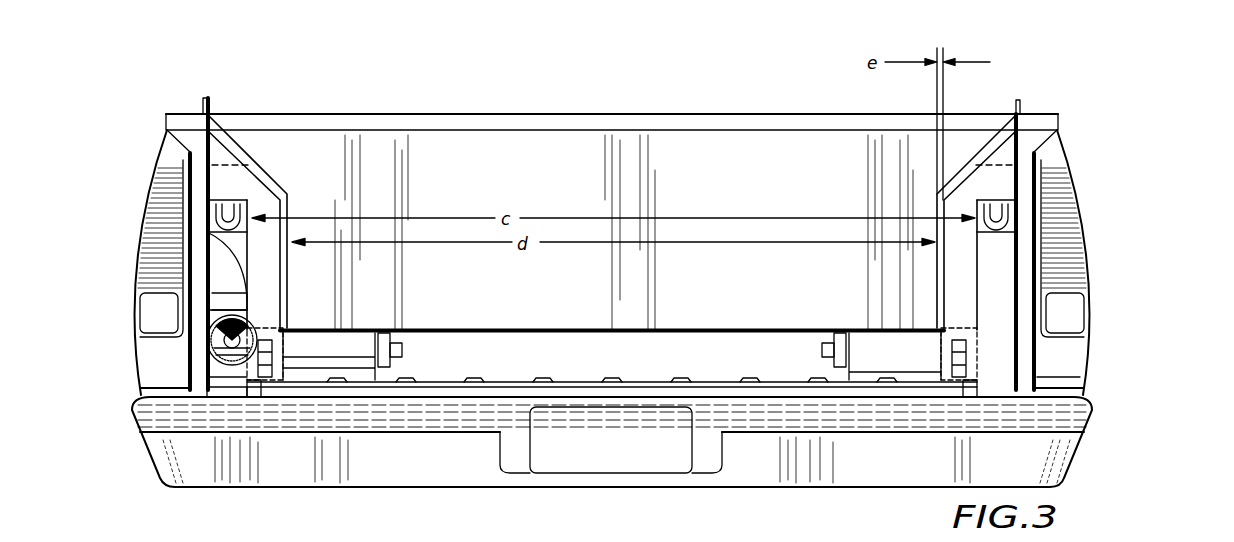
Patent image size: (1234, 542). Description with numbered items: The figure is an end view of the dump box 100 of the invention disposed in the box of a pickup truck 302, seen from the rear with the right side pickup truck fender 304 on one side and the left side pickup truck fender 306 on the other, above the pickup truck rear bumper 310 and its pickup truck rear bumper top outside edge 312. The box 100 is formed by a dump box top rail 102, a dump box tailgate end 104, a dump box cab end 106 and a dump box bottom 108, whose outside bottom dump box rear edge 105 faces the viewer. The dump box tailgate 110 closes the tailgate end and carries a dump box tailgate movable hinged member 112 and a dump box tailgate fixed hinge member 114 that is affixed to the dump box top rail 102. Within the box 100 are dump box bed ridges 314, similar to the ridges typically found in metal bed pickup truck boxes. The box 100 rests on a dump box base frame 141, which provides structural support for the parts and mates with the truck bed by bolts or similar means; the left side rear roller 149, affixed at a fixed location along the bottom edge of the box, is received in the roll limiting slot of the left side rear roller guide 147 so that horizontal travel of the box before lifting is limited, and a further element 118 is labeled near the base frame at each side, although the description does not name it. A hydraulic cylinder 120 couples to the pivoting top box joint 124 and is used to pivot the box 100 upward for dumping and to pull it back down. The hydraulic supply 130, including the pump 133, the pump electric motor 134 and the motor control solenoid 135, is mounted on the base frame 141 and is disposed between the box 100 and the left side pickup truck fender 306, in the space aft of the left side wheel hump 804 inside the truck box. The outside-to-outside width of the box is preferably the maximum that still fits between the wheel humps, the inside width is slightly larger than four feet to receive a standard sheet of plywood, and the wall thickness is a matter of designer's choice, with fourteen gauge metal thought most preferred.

The dump box 100 is at (432, 113).
The dump box top rail 102 is at (178, 113).
The dump box tailgate end 104 is at (190, 140).
The outside bottom dump box rear edge 105 is at (193, 115).
The dump box cab end 106 is at (377, 140).
The dump box bottom 108 is at (437, 327).
The dump box tailgate 110 is at (487, 541).
The dump box tailgate movable hinged member 112 is at (393, 537).
The dump box tailgate fixed hinge member 114 is at (207, 102).
The latch bracket 118 is at (253, 392).
The hydraulic cylinder 120 is at (215, 218).
The pivoting top box joint 124 is at (207, 183).
The hydraulic supply source 130 is at (210, 310).
The pump 133 is at (212, 340).
The pump electric motor 134 is at (212, 325).
The motor control solenoid 135 is at (227, 297).
The dump box base frame 141 is at (521, 333).
The left side rear roller guide 147 is at (350, 333).
The left side rear roller 149 is at (365, 360).
The pickup truck 302 is at (1093, 303).
The right side pickup truck fender 304 is at (1038, 280).
The left side pickup truck fender 306 is at (205, 235).
The pickup truck rear bumper 310 is at (233, 488).
The pickup truck rear bumper top outside edge 312 is at (177, 400).
The dump box bed ridges 314 is at (607, 385).
The left side wheel hump 804 is at (232, 270).